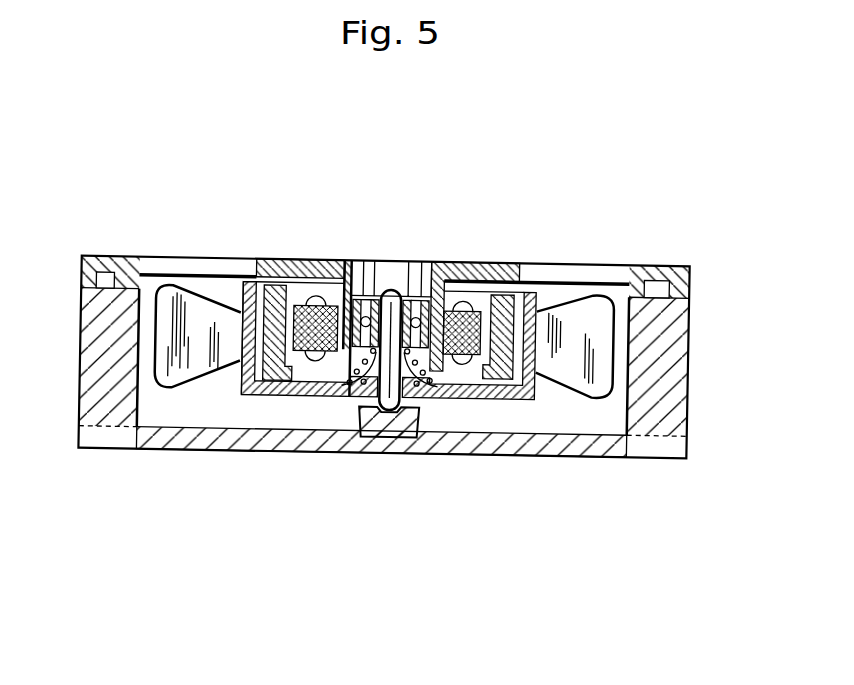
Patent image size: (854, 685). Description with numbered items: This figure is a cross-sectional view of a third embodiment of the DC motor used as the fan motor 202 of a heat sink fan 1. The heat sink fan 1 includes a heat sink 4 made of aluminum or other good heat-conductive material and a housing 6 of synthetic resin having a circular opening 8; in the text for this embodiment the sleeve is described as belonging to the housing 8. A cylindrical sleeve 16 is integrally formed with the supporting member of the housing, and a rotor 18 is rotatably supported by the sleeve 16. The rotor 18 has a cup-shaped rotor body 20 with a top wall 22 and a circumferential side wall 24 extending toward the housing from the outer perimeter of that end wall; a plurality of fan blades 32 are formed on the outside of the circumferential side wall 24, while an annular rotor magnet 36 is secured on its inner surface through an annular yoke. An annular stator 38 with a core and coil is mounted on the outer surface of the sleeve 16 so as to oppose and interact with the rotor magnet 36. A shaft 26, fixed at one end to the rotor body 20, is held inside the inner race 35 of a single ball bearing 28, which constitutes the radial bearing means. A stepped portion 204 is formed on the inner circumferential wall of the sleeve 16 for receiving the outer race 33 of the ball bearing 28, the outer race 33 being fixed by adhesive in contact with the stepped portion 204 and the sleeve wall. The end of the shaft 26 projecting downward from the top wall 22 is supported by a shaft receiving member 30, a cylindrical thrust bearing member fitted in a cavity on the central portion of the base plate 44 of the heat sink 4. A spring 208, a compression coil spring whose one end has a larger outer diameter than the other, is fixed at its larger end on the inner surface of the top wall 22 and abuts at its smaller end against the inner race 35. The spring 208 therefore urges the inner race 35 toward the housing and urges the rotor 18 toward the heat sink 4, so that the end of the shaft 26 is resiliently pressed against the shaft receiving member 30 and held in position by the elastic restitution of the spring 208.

The heat sink fan 1 is at (693, 379).
The heat sink 4 is at (694, 427).
The housing 6 is at (256, 258).
The circular opening 8 is at (654, 266).
The cylindrical sleeve 16 is at (478, 272).
The rotor 18 is at (548, 298).
The rotor body 20 is at (222, 292).
The top wall 22 is at (289, 398).
The circumferential side wall 24 is at (243, 384).
The shaft 26 is at (407, 300).
The ball bearing 28 is at (377, 297).
The shaft receiving member 30 is at (410, 412).
The fan blades 32 is at (175, 388).
The outer race 33 is at (453, 399).
The inner race 35 is at (412, 289).
The rotor magnet 36 is at (273, 267).
The stator 38 is at (303, 293).
The base plate 44 is at (537, 436).
The fan motor 202 is at (447, 252).
The stepped portion 204 is at (367, 290).
The spring 208 is at (352, 388).